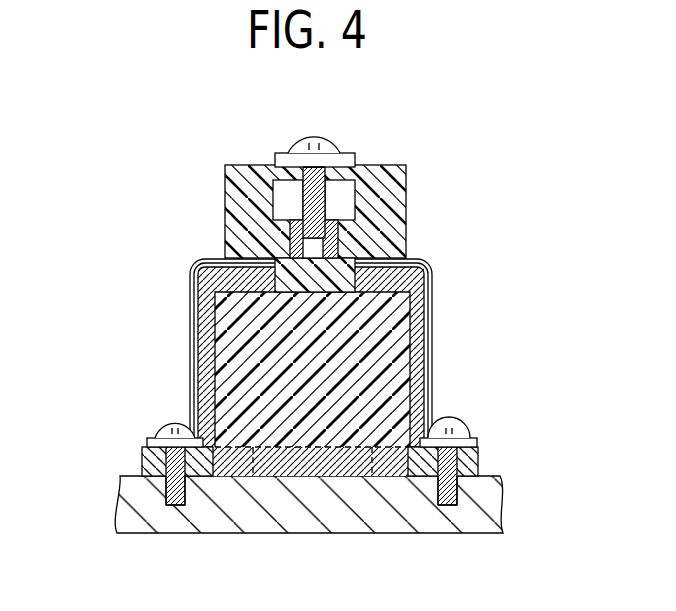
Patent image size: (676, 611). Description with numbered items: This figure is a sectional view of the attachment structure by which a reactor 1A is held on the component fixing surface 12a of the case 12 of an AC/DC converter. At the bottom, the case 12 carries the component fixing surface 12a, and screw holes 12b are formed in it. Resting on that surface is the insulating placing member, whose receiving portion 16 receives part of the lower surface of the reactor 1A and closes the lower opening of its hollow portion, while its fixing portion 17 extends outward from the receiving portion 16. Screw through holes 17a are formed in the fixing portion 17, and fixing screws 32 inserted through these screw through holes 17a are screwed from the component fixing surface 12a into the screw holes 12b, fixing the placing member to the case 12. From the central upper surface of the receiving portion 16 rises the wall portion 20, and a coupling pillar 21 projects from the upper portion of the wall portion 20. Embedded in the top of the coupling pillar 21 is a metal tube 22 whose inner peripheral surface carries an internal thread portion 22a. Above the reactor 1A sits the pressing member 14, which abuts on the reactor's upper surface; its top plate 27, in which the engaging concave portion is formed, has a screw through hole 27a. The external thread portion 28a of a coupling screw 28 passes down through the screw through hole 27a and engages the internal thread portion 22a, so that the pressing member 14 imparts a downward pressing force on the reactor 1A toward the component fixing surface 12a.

The reactor 1A is at (428, 264).
The case 12 is at (388, 505).
The component fixing surface 12a is at (490, 476).
The screw hole 12b is at (177, 505).
The pressing member 14 is at (217, 205).
The receiving portion 16 is at (312, 465).
The fixing portion 17 is at (166, 470).
The screw through hole 17a is at (166, 480).
The wall portion 20 is at (318, 347).
The coupling pillar 21 is at (280, 247).
The metal tube 22 is at (325, 240).
The internal thread portion 22a is at (345, 200).
The top plate 27 is at (356, 165).
The screw through hole 27a is at (337, 165).
The coupling screw 28 is at (308, 141).
The external thread portion 28a is at (275, 173).
The fixing screw 32 is at (178, 426).